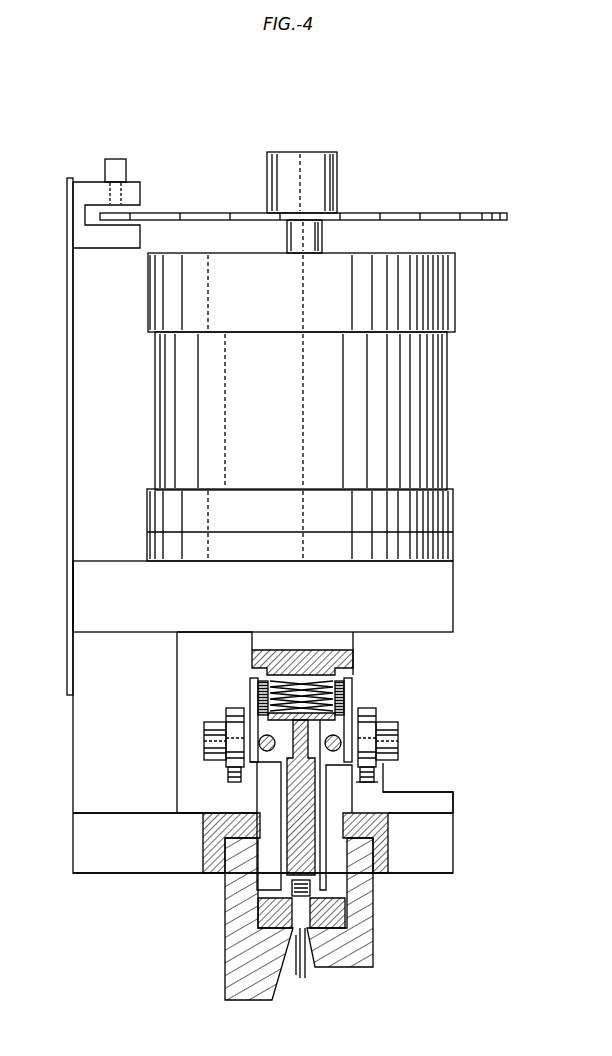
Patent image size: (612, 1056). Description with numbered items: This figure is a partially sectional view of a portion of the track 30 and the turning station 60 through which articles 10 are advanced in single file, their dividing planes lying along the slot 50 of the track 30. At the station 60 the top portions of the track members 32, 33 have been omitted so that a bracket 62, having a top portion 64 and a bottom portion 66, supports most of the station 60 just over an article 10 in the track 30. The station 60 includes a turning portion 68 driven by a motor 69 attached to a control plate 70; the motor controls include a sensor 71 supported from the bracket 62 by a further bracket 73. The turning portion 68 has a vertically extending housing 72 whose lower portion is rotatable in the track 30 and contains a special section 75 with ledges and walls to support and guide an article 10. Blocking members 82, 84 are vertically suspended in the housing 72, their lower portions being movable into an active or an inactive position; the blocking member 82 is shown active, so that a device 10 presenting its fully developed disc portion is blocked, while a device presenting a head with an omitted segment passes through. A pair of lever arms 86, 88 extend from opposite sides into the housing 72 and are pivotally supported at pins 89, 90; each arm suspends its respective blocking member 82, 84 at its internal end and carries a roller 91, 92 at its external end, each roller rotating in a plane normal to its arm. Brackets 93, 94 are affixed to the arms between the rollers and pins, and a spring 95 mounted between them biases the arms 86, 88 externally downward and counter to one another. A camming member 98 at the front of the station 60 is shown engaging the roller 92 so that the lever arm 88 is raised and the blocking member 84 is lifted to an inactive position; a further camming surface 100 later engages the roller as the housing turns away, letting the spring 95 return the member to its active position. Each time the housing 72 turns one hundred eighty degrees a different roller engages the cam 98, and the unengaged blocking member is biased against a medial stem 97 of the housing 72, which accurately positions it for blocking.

The article 10 is at (320, 930).
The track 30 is at (281, 919).
The member 32 is at (230, 918).
The member 33 is at (365, 923).
The slot 50 is at (296, 948).
The turning station 60 is at (315, 356).
The bracket 62 is at (66, 778).
The top portion 64 is at (455, 600).
The bottom portion 66 is at (455, 828).
The turning portion 68 is at (360, 670).
The motor 69 is at (158, 380).
The control plate 70 is at (407, 212).
The sensor 71 is at (126, 172).
The housing 72 is at (274, 642).
The bracket 73 is at (69, 179).
The special section 75 is at (320, 898).
The blocking member 82 is at (283, 792).
The blocking member 84 is at (326, 815).
The lever arm 86 is at (196, 735).
The lever arm 88 is at (406, 733).
The pin 89 is at (258, 762).
The pin 90 is at (355, 787).
The roller 91 is at (232, 710).
The roller 92 is at (368, 710).
The bracket 93 is at (254, 698).
The bracket 94 is at (348, 706).
The spring 95 is at (299, 649).
The medial stem 97 is at (298, 804).
The camming member 98 is at (447, 795).
The camming surface 100 is at (352, 775).